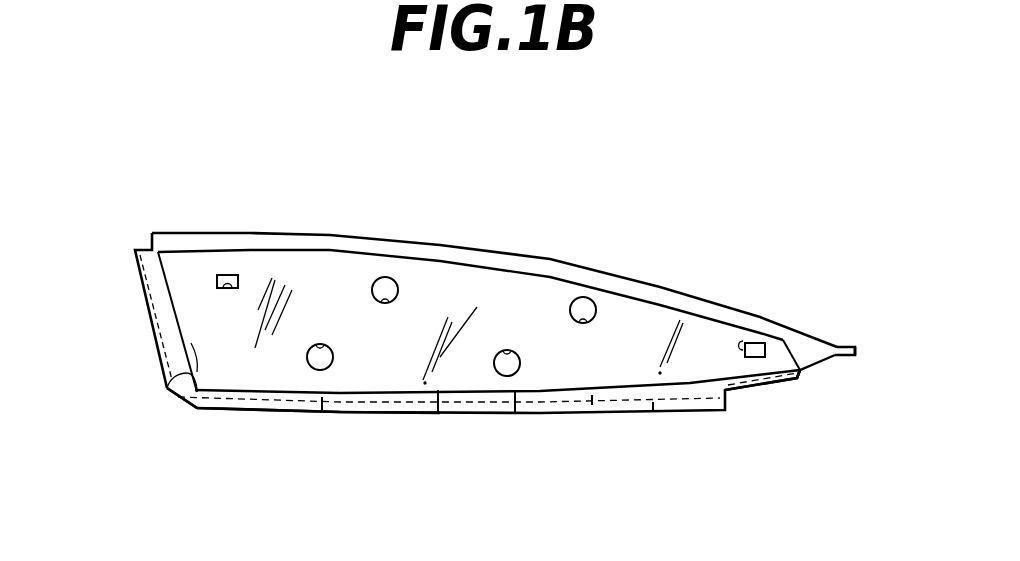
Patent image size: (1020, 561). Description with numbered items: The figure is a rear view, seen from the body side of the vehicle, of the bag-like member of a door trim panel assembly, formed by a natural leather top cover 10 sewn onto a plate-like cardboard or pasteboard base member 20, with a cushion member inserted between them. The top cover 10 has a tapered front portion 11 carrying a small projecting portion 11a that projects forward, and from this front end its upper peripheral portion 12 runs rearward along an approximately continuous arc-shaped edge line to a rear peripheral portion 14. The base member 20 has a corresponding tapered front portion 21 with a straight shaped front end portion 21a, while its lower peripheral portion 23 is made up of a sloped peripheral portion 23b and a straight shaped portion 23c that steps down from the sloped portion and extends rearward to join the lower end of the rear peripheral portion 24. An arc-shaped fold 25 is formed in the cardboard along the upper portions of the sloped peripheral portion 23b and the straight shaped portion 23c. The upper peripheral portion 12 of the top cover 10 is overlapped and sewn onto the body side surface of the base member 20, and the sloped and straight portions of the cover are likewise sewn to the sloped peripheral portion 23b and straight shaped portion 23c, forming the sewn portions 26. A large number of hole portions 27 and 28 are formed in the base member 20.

The top cover 10 is at (268, 233).
The tapered front portion 11 is at (835, 347).
The small projecting portion 11a is at (853, 353).
The upper peripheral portion 12 is at (567, 265).
The rear peripheral portion 14 is at (150, 323).
The plate-like base member 20 is at (467, 273).
The tapered front portion 21 is at (787, 343).
The straight shaped front end portion 21a is at (802, 348).
The lower peripheral portion 23 is at (463, 417).
The sloped peripheral portion 23b is at (788, 385).
The straight shaped portion 23c is at (370, 415).
The rear peripheral portion 24 is at (167, 388).
The fold 25 is at (640, 373).
The sewn portion 26 is at (592, 405).
The hole portion 27 is at (320, 344).
The hole portion 28 is at (228, 288).